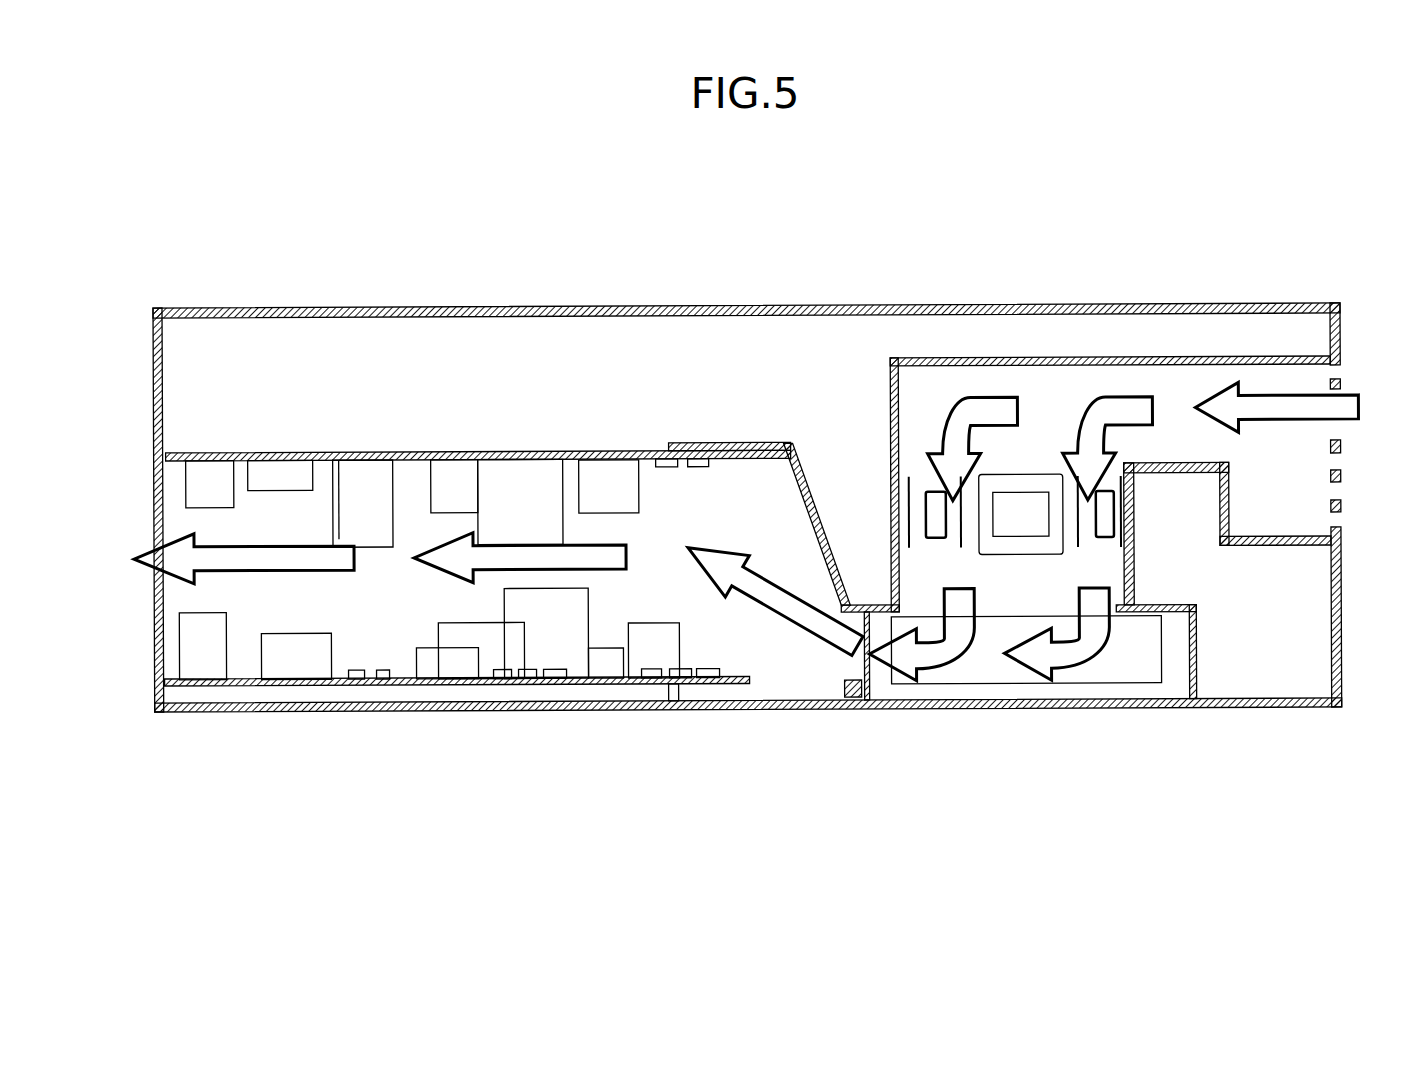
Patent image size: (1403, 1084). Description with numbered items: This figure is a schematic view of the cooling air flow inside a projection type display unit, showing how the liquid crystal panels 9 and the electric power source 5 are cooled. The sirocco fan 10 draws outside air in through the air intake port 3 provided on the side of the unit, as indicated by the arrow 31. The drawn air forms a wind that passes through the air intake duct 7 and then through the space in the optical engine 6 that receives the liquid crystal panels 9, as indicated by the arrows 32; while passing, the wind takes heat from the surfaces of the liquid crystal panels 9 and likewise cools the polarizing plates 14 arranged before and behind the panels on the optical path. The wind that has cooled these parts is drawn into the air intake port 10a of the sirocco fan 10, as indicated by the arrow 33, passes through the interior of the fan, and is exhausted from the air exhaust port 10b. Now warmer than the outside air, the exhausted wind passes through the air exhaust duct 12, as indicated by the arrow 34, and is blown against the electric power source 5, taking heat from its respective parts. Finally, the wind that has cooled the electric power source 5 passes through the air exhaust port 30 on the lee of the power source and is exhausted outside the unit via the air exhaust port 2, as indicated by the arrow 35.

The air exhaust port 2 is at (138, 603).
The air intake port 3 is at (1352, 475).
The electric power source 5 is at (452, 637).
The optical engine 6 is at (893, 458).
The air intake duct 7 is at (1175, 391).
The liquid crystal panels 9 is at (930, 481).
The sirocco fan 10 is at (1180, 682).
The air intake port of the sirocco fan 10a is at (997, 602).
The air exhaust port of the sirocco fan 10b is at (857, 661).
The air exhaust duct 12 is at (785, 512).
The polarizing plates 14 is at (958, 553).
The air exhaust port 30 is at (172, 513).
The arrow 31 is at (1292, 412).
The arrows 32 is at (1097, 417).
The arrow 33 is at (1065, 604).
The arrow 34 is at (775, 605).
The arrow 35 is at (250, 559).